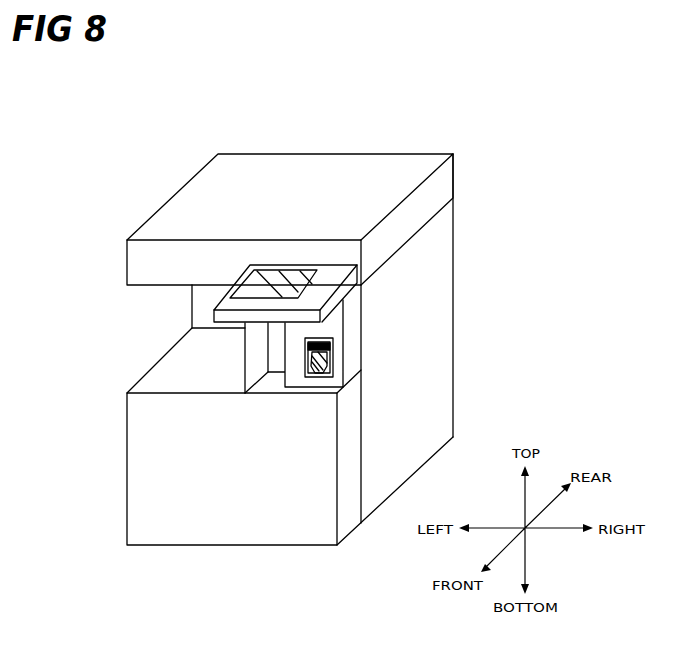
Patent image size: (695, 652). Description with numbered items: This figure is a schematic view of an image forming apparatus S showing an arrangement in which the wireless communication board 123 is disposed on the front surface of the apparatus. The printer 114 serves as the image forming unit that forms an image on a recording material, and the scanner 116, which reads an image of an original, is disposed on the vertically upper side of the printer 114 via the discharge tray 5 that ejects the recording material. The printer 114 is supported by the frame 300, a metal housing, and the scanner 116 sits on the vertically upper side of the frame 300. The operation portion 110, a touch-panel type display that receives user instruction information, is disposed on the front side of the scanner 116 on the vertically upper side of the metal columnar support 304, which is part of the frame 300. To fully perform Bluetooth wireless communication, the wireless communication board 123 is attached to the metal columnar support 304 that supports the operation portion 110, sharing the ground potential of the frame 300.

The image forming apparatus S is at (336, 153).
The scanner 116 is at (145, 260).
The operation portion 110 is at (331, 275).
The discharge tray 5 is at (195, 367).
The printer 114 is at (145, 466).
The metal columnar support 304 is at (353, 325).
The frame 300 is at (460, 402).
The wireless communication board 123 is at (333, 363).